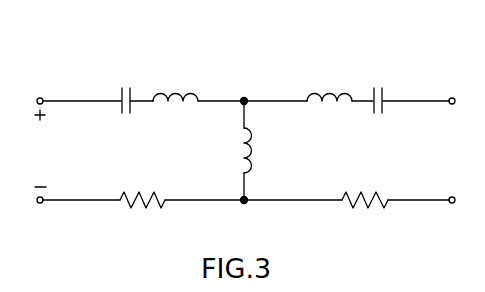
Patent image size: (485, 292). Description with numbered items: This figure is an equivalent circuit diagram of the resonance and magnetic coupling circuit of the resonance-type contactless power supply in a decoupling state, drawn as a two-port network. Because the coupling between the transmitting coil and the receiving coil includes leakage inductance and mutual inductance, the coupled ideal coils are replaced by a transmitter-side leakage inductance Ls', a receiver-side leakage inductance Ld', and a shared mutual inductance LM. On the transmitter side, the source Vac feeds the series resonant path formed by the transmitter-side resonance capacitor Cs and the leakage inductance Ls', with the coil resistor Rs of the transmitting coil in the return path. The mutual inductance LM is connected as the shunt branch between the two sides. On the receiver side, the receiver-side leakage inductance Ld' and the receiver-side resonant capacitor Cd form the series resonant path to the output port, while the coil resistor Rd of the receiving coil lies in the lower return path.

The AC voltage source Vac is at (44, 148).
The transmitter-side resonance capacitor Cs is at (125, 88).
The transmitter-side leakage inductance Ls' is at (175, 82).
The receiver-side leakage inductance Ld' is at (329, 82).
The receiver-side resonant capacitor Cd is at (376, 88).
The mutual inductance LM is at (231, 150).
The coil resistor Rs is at (142, 186).
The coil resistor Rd is at (365, 186).